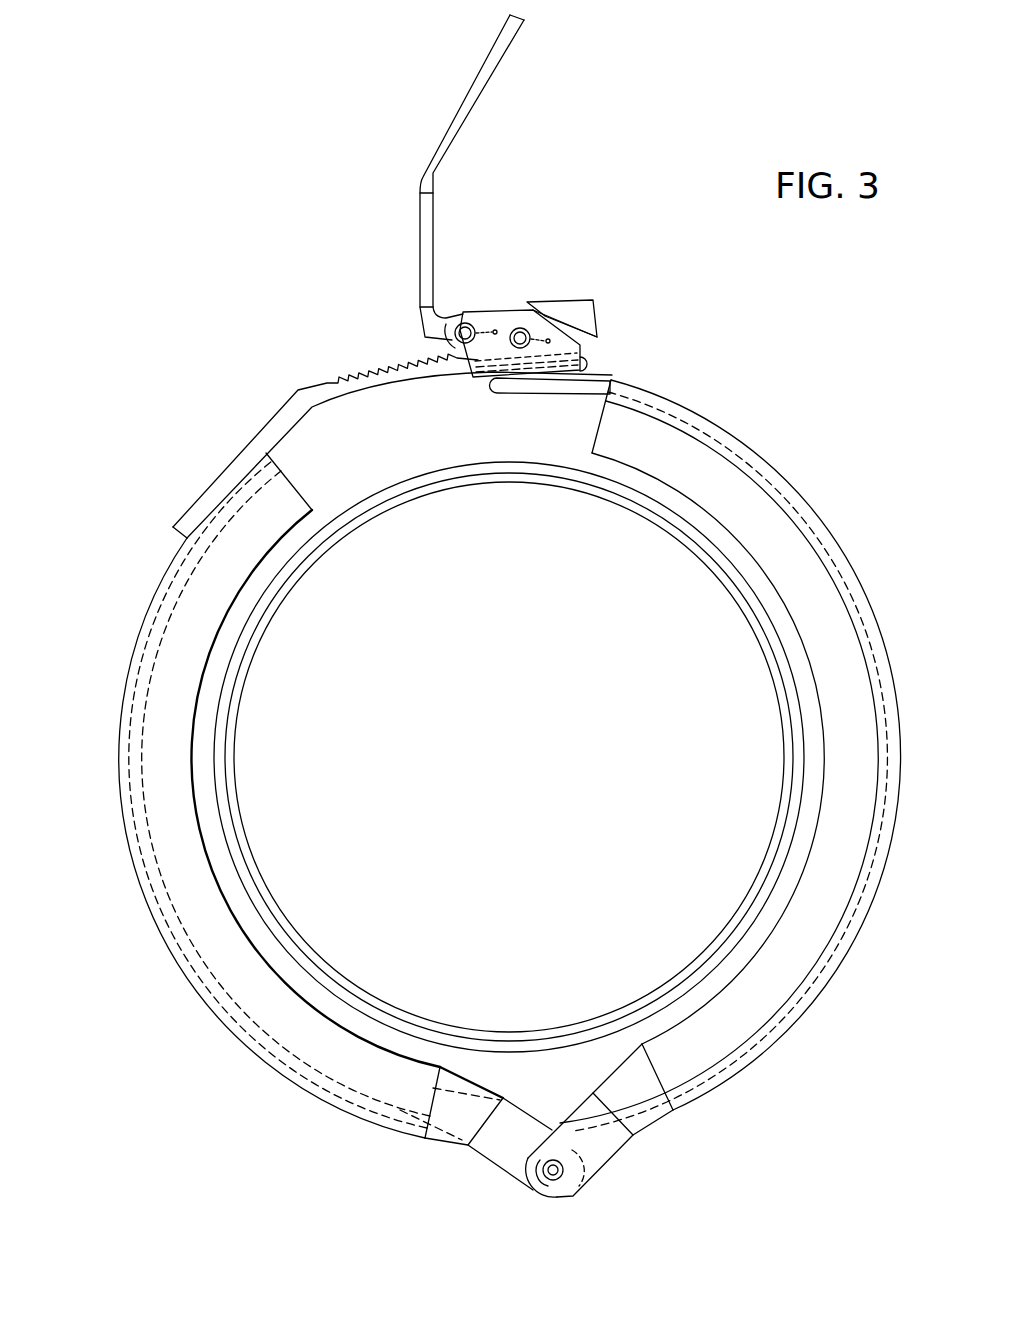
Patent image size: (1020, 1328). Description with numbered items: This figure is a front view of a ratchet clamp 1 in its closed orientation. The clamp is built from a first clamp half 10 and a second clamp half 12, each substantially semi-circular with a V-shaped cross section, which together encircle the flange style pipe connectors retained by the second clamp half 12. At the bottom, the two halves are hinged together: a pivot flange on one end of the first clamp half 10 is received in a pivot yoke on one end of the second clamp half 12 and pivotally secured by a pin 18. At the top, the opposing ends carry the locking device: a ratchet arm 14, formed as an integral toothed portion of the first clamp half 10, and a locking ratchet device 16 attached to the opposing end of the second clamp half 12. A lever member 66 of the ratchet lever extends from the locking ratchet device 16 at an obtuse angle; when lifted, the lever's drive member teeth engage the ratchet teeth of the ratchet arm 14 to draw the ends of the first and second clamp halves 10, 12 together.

The ratchet clamp 1 is at (228, 178).
The first clamp half 10 is at (145, 622).
The second clamp half 12 is at (745, 447).
The ratchet arm 14 is at (349, 365).
The locking ratchet device 16 is at (576, 279).
The pin 18 is at (551, 1176).
The lever member 66 is at (524, 18).